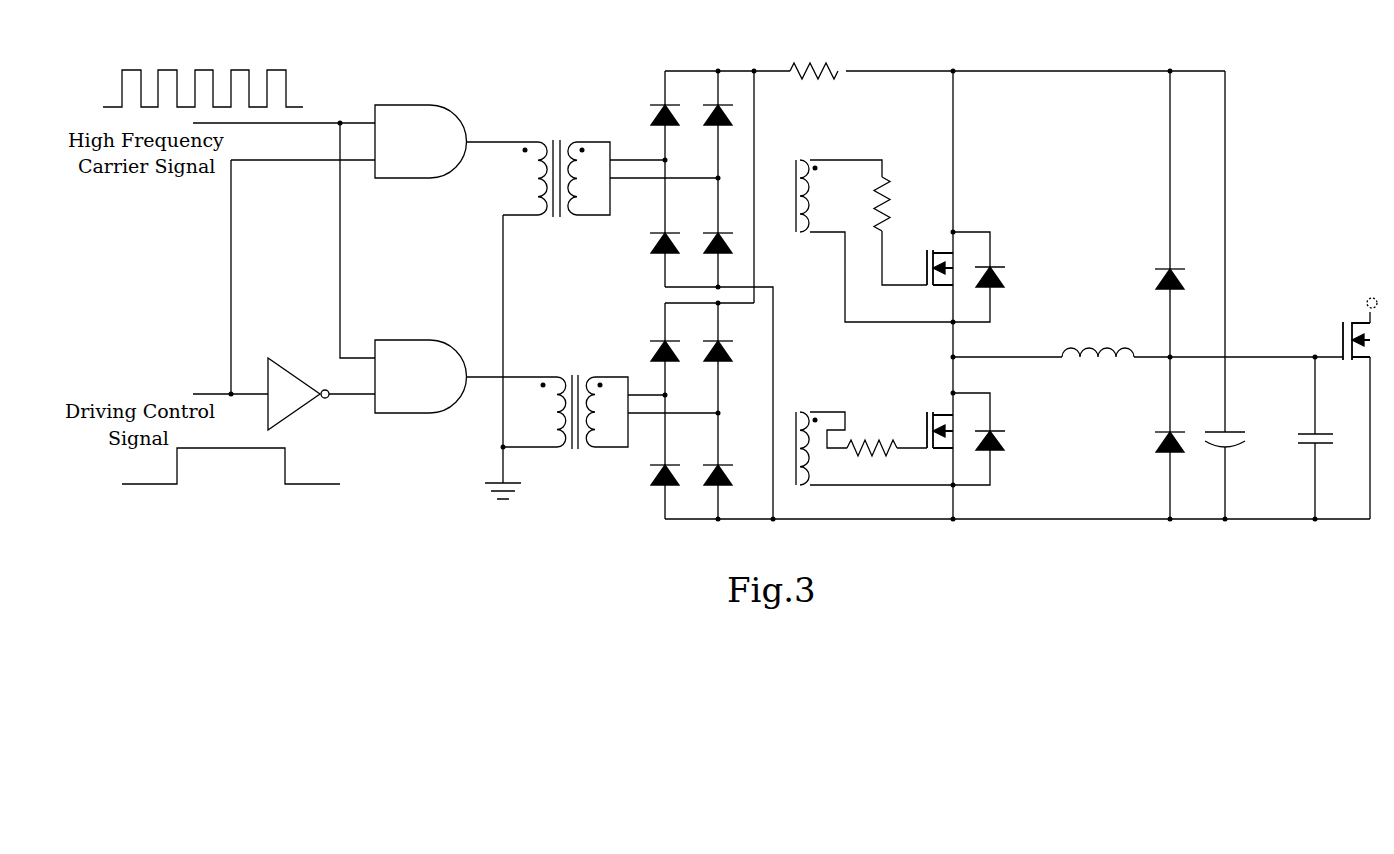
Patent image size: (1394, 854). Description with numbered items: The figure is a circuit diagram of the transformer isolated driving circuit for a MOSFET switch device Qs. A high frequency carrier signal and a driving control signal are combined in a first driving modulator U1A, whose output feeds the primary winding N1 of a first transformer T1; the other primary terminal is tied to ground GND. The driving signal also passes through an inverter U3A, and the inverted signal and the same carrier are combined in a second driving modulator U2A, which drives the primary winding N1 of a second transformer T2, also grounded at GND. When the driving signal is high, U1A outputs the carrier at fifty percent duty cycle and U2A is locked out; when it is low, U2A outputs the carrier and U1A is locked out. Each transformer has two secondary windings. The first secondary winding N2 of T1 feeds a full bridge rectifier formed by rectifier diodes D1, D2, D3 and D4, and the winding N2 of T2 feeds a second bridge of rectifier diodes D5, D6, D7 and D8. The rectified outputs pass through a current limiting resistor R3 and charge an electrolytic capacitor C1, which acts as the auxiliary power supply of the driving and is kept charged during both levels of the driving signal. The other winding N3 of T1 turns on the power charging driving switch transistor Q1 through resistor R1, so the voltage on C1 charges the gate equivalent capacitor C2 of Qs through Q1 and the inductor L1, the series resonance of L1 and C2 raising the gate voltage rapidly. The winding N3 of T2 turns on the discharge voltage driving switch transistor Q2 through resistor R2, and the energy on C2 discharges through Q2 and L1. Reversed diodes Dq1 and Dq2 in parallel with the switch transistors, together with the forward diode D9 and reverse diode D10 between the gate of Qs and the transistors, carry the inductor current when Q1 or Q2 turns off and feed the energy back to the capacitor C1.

The first driving modulator U1A is at (419, 131).
The second driving modulator U2A is at (419, 365).
The inverter U3A is at (304, 393).
The first transformer T1 is at (657, 179).
The second transformer T2 is at (666, 421).
The primary winding N1 is at (528, 288).
The secondary winding N2 is at (618, 288).
The another winding N3 is at (818, 323).
The ground GND is at (507, 474).
The rectifier diode D1 is at (654, 107).
The rectifier diode D2 is at (654, 235).
The rectifier diode D3 is at (708, 107).
The rectifier diode D4 is at (708, 235).
The rectifier diode D5 is at (654, 342).
The rectifier diode D6 is at (654, 466).
The rectifier diode D7 is at (708, 342).
The rectifier diode D8 is at (708, 466).
The diode D9 is at (1159, 270).
The diode D10 is at (1159, 432).
The resistor R1 is at (868, 222).
The resistor R2 is at (868, 434).
The current limiting resistor R3 is at (814, 57).
The power charging driving switch transistor Q1 is at (926, 259).
The discharge voltage driving switch transistor Q2 is at (926, 421).
The reversed diode Dq1 is at (926, 277).
The reversed diode Dq2 is at (926, 439).
The inductor L1 is at (1098, 340).
The electrolytic capacitor C1 is at (1234, 430).
The equivalent capacitor C2 is at (1327, 428).
The switch device Qs is at (1356, 323).